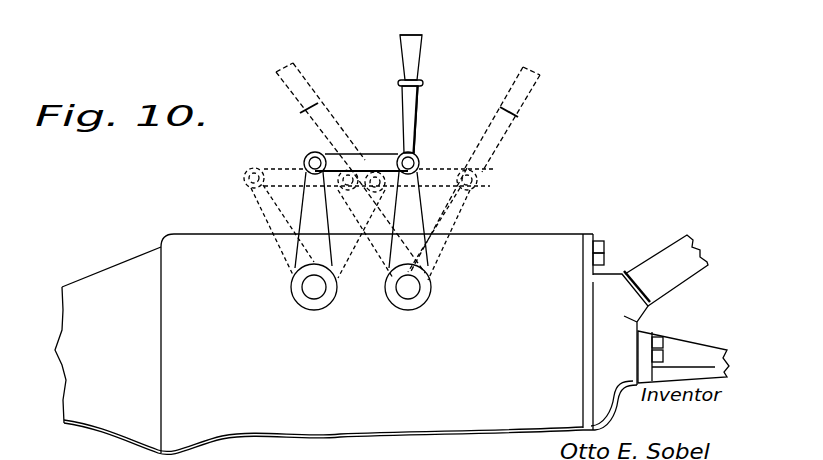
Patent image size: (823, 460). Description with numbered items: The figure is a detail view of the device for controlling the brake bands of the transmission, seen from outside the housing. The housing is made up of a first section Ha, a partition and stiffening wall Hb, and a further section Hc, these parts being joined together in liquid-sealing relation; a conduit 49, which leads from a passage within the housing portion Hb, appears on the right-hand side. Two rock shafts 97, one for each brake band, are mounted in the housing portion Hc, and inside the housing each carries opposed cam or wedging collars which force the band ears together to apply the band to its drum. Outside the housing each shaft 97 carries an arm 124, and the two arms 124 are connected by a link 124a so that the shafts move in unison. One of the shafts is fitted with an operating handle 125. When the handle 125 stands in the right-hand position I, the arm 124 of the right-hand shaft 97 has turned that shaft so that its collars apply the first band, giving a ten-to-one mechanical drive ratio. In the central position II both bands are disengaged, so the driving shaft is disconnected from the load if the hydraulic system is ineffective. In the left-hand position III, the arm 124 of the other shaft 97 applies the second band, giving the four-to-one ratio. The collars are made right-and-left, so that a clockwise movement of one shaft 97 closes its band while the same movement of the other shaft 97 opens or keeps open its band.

The arm 124 is at (307, 213).
The link 124a is at (363, 163).
The operating handle 125 is at (415, 104).
The rock shaft 97 is at (408, 287).
The conduit 49 is at (706, 266).
The first housing section Ha is at (677, 373).
The partition and stiffening wall Hb is at (608, 283).
The housing section Hc is at (346, 344).
The handle position I is at (475, 156).
The central handle position II is at (407, 19).
The handle position III is at (348, 153).